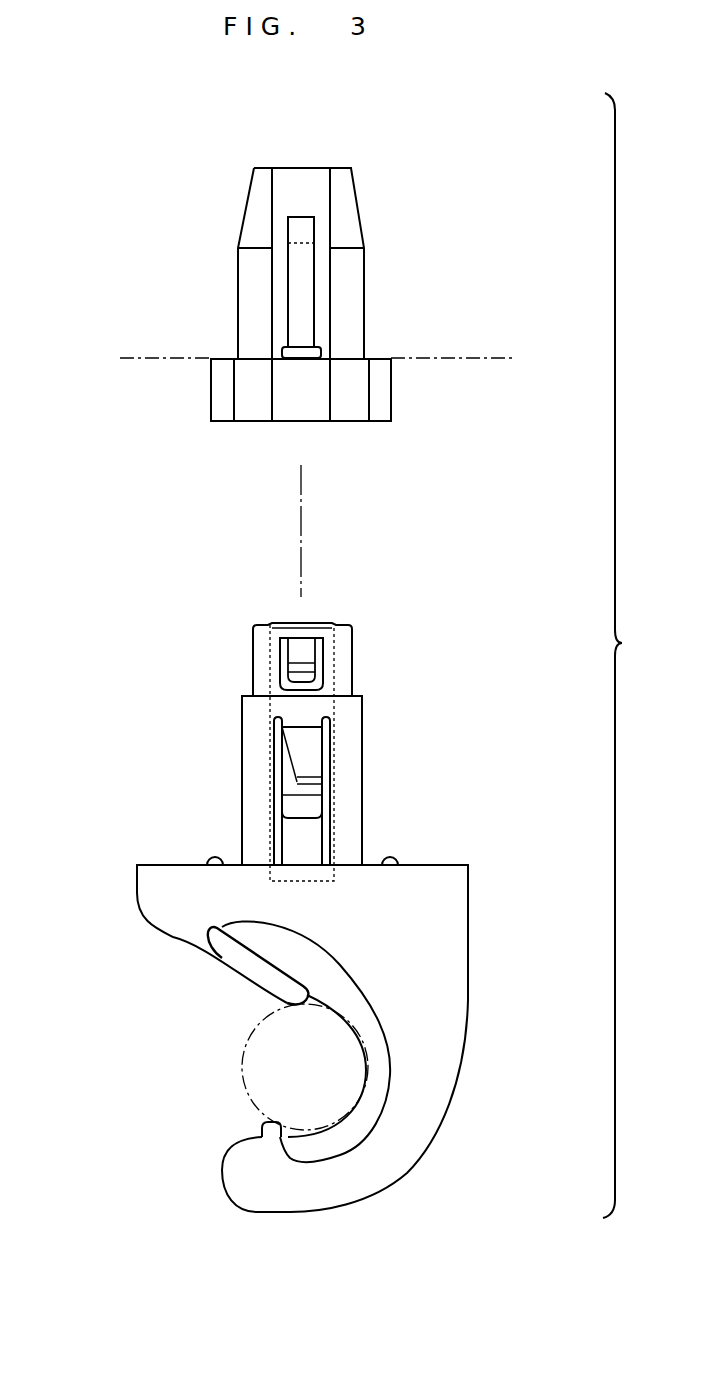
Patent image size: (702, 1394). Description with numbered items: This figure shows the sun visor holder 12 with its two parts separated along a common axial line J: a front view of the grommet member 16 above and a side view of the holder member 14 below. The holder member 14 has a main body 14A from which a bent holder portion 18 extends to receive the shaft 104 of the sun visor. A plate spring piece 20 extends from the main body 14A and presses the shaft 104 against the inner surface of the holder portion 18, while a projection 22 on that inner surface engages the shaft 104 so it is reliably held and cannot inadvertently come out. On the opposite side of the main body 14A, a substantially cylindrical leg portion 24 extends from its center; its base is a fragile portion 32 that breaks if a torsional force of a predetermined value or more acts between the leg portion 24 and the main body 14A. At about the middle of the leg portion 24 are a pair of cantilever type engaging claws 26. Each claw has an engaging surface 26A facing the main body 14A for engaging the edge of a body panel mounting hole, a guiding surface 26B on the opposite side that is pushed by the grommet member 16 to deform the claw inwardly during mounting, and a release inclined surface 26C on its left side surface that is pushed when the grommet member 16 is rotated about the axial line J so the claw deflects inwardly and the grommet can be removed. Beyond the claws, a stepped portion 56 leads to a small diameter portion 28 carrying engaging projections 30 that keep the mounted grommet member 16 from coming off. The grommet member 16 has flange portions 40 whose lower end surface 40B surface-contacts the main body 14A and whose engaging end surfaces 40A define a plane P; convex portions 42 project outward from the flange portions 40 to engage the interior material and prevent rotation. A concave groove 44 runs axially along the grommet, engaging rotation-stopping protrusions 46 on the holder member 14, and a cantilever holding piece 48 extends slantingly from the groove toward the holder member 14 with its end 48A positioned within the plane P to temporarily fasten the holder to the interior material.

The sun visor holder 12 is at (512, 455).
The holder member 14 is at (465, 638).
The main body 14A is at (150, 893).
The grommet member 16 is at (447, 452).
The holder portion 18 is at (363, 1183).
The plate spring piece 20 is at (258, 992).
The projection 22 is at (263, 1125).
The leg portion 24 is at (238, 705).
The engaging claws 26 is at (330, 754).
The engaging surface 26A is at (308, 788).
The guiding surface 26B is at (305, 740).
The release inclined surface 26C is at (285, 770).
The small diameter portion 28 is at (262, 655).
The engaging projections 30 is at (302, 648).
The fragile portion 32 is at (365, 862).
The flange portions 40 is at (253, 408).
The engaging end surfaces 40A is at (260, 355).
The lower end surface 40B is at (262, 424).
The convex portions 42 is at (218, 385).
The concave groove 44 is at (306, 190).
The rotation-stopping protrusions 46 is at (213, 858).
The holding piece 48 is at (300, 262).
The end 48A is at (302, 360).
The stepped portion 56 is at (357, 695).
The shaft 104 is at (243, 1095).
The plane P is at (477, 353).
The axial line J is at (300, 527).